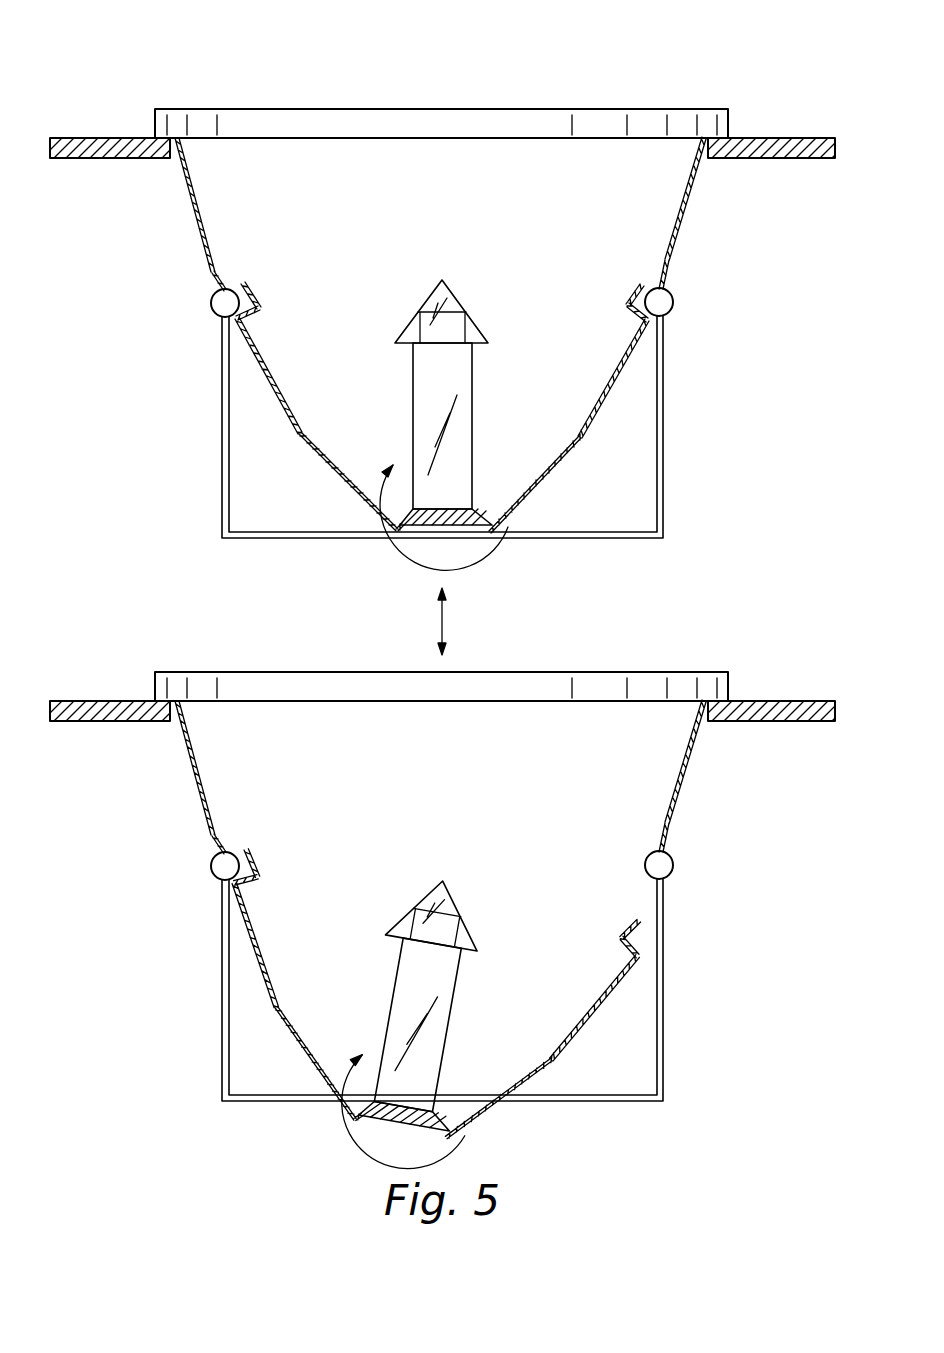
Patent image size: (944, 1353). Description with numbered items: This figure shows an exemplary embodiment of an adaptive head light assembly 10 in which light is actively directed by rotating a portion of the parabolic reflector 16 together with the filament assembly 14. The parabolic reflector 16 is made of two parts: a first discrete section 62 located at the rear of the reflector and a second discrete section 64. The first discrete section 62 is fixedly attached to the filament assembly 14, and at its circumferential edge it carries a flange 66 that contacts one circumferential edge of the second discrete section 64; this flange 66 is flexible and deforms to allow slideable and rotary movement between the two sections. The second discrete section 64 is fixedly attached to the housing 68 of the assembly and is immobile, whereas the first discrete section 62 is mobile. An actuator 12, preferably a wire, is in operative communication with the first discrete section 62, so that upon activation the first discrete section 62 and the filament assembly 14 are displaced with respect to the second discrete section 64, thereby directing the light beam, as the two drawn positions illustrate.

The adaptive head light assembly 10 is at (594, 89).
The actuator 12 is at (664, 422).
The filament assembly 14 is at (430, 390).
The parabolic reflector 16 is at (186, 207).
The first discrete section 62 is at (534, 485).
The second discrete section 64 is at (703, 185).
The flange 66 is at (632, 290).
The housing 68 is at (796, 138).